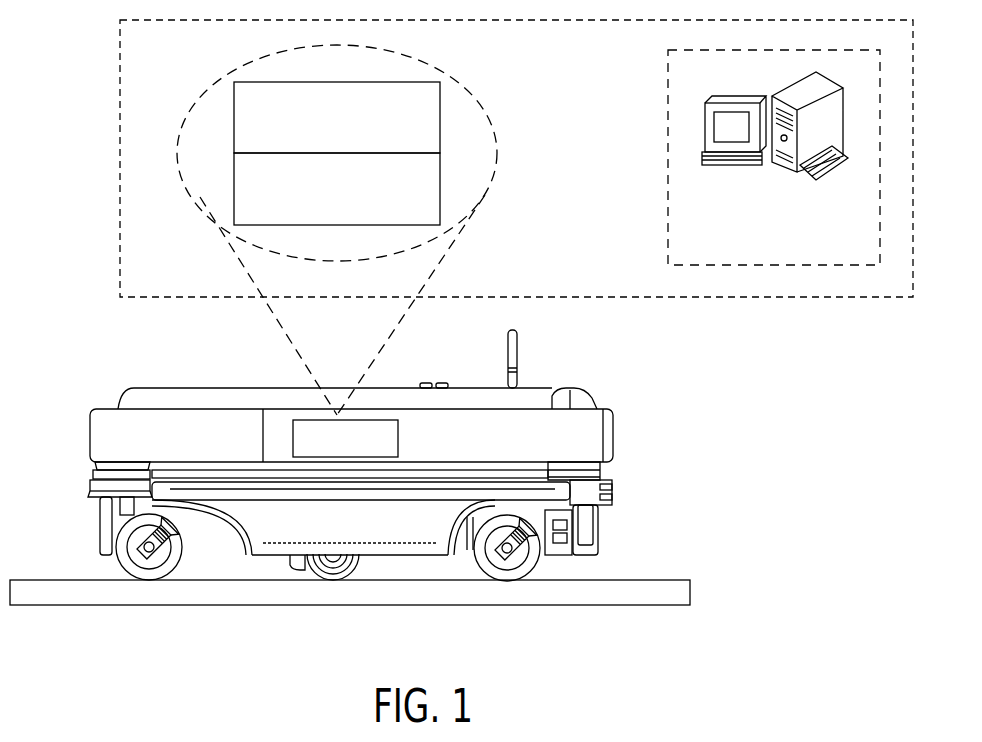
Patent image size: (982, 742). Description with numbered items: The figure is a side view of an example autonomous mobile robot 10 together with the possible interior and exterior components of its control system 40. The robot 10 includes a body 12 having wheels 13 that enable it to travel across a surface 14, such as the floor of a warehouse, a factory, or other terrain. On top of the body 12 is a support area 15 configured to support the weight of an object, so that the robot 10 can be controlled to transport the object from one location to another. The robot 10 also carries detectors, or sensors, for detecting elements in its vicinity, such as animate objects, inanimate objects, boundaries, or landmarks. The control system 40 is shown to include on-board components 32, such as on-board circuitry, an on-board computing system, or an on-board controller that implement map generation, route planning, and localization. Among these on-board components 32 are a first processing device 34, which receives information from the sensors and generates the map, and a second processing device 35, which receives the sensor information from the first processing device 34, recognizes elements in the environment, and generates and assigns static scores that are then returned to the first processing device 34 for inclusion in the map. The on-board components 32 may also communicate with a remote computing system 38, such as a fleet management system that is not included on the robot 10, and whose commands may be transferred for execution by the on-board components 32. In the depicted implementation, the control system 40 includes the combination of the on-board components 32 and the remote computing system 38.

The robot 10 is at (95, 372).
The body 12 is at (562, 389).
The wheels 13 is at (115, 565).
The surface 14 is at (60, 606).
The support area 15 is at (225, 388).
The on-board components 32 is at (196, 100).
The first processing device 34 is at (440, 127).
The second processing device 35 is at (440, 195).
The remote computing system 38 is at (668, 160).
The control system 40 is at (120, 211).